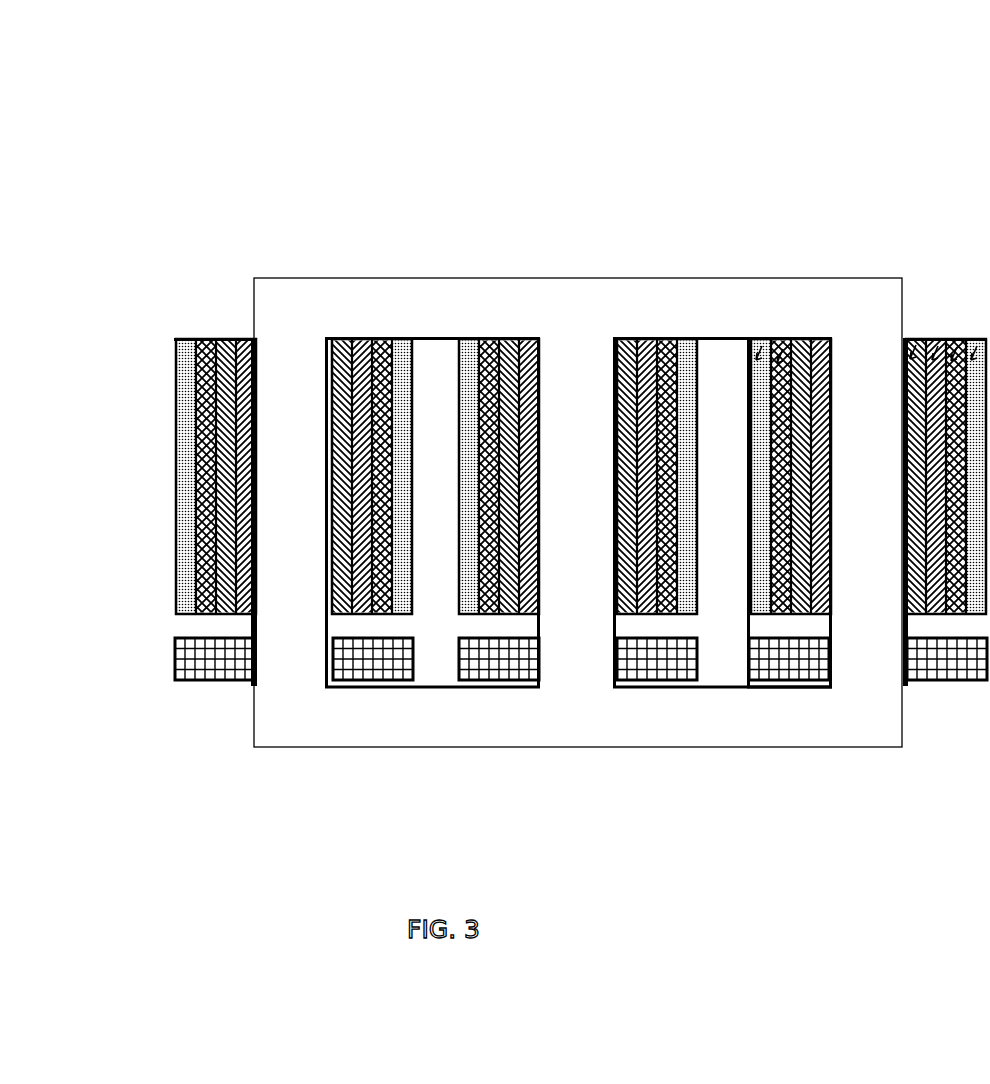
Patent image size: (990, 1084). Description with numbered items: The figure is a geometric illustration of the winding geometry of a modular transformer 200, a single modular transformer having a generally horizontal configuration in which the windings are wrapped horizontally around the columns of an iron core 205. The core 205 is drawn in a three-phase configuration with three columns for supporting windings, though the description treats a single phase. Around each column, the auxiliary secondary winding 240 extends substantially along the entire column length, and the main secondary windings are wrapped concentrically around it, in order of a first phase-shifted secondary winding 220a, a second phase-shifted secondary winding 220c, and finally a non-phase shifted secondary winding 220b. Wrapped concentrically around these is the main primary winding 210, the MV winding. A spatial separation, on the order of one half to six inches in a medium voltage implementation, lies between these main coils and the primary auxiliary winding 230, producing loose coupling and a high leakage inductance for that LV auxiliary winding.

The modular transformer 200 is at (89, 122).
The core 205 is at (652, 278).
The main primary winding 210 is at (868, 337).
The first phase-shifted secondary winding 220a is at (828, 337).
The non-phase shifted secondary winding 220b is at (797, 337).
The second phase-shifted secondary winding 220c is at (807, 337).
The primary auxiliary winding 230 is at (802, 680).
The auxiliary secondary winding 240 is at (828, 621).